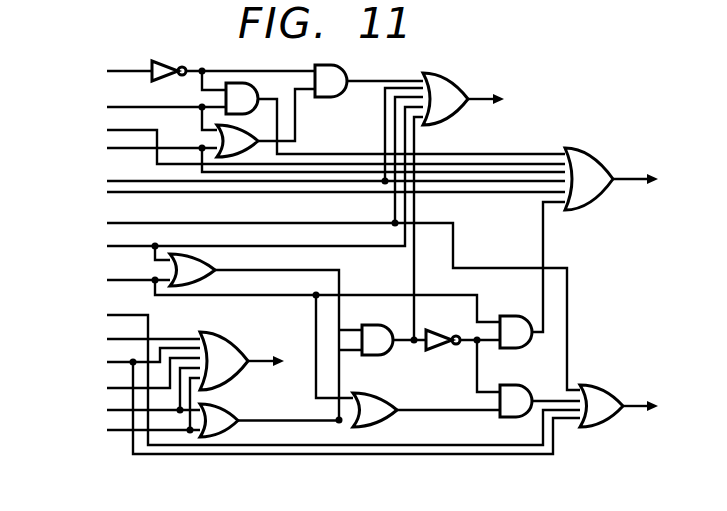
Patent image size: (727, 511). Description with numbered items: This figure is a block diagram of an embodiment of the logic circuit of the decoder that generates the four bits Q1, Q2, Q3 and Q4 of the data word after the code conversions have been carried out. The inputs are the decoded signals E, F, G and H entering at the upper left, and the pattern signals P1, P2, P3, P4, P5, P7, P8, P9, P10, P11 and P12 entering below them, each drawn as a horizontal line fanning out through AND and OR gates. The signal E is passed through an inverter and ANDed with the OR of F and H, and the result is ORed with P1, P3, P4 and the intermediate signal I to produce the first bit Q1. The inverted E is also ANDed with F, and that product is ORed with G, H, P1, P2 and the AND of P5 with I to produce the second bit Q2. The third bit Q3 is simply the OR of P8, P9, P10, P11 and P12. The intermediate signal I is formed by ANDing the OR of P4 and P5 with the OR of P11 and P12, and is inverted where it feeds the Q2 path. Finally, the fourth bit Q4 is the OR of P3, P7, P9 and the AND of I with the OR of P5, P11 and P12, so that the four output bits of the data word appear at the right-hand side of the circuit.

The signal E is at (113, 68).
The signal F is at (149, 108).
The signal G is at (319, 138).
The signal H is at (99, 148).
The signal p1 P1 is at (318, 143).
The signal p2 P2 is at (101, 194).
The signal p3 P3 is at (326, 243).
The signal p4 P4 is at (101, 247).
The signal p5 P5 is at (286, 332).
The signal p7 P7 is at (101, 315).
The signal p8 P8 is at (135, 342).
The signal p9 P9 is at (101, 362).
The signal p10 P10 is at (133, 386).
The signal p11 P11 is at (101, 410).
The signal p12 P12 is at (98, 428).
The intermediate signal I is at (406, 337).
The data word bit Q1 is at (482, 99).
The data word bit Q2 is at (629, 179).
The data word bit Q3 is at (260, 361).
The data word bit Q4 is at (638, 405).